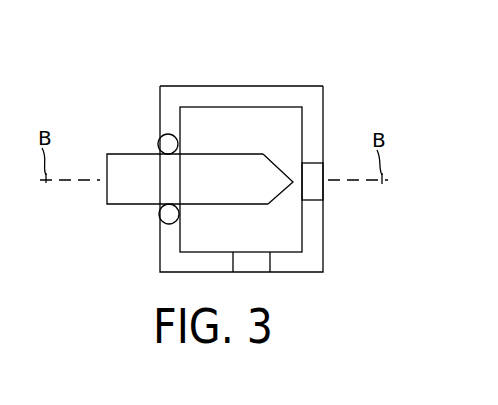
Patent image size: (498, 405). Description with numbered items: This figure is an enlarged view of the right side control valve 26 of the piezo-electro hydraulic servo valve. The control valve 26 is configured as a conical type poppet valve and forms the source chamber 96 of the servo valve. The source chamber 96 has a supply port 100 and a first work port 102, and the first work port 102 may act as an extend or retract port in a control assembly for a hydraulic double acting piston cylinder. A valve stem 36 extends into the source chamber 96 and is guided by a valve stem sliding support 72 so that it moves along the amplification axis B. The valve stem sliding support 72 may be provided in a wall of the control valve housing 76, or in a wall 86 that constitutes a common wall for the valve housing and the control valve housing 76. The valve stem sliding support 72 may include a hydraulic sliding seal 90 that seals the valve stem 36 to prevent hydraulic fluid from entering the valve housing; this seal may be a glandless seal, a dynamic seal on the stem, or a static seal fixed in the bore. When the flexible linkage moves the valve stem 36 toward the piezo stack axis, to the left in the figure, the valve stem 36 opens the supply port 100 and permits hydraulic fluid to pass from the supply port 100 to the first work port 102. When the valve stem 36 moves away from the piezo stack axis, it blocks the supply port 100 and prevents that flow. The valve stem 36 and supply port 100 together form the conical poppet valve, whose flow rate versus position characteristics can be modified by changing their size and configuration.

The control valve 26 is at (203, 146).
The valve stem 36 is at (255, 177).
The valve stem sliding support 72 is at (168, 113).
The control valve housing 76 is at (290, 80).
The wall 86 is at (170, 237).
The hydraulic sliding seal 90 is at (158, 142).
The source chamber 96 is at (290, 127).
The supply port 100 is at (312, 165).
The first work port 102 is at (267, 262).